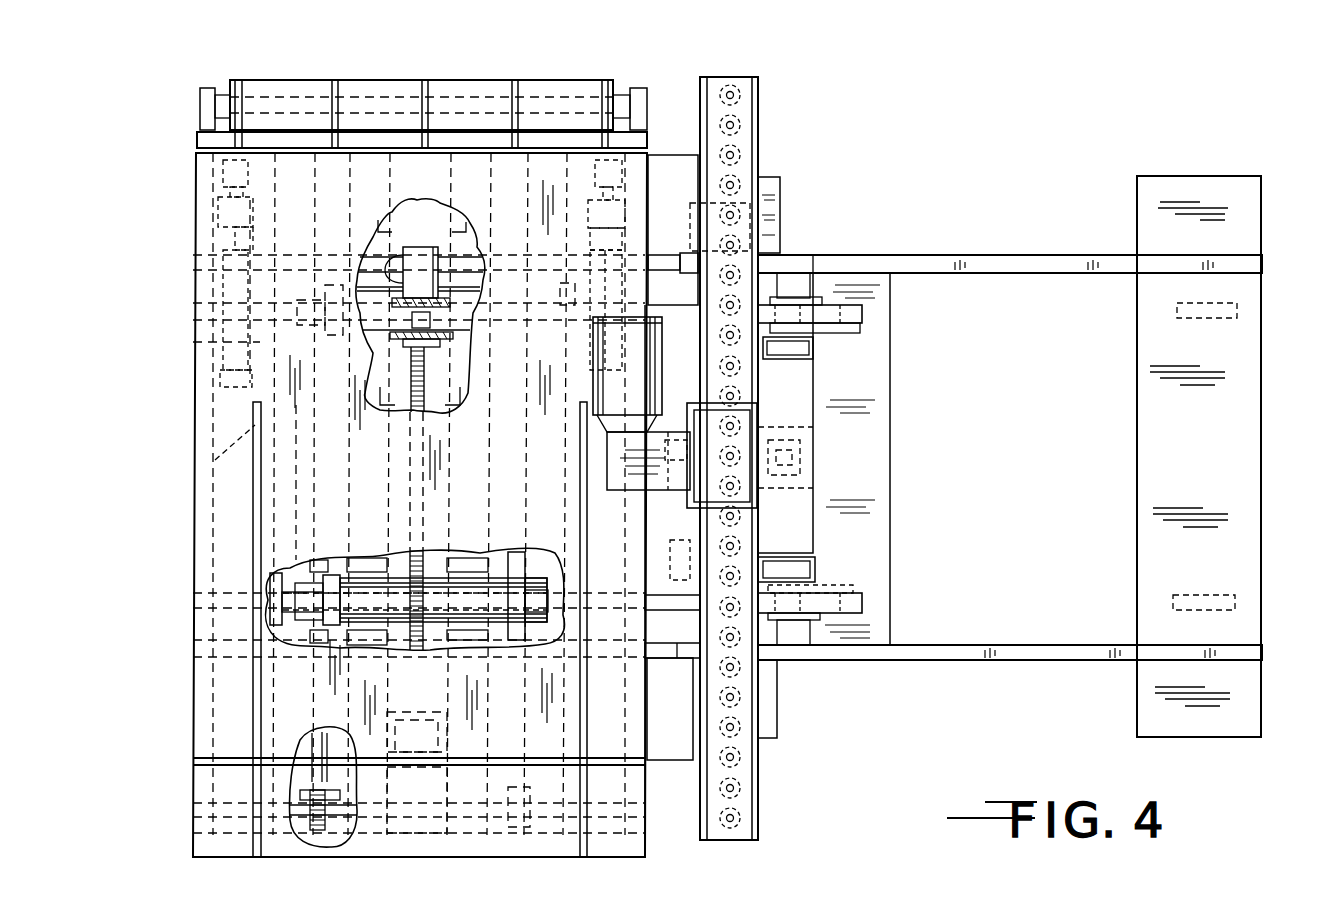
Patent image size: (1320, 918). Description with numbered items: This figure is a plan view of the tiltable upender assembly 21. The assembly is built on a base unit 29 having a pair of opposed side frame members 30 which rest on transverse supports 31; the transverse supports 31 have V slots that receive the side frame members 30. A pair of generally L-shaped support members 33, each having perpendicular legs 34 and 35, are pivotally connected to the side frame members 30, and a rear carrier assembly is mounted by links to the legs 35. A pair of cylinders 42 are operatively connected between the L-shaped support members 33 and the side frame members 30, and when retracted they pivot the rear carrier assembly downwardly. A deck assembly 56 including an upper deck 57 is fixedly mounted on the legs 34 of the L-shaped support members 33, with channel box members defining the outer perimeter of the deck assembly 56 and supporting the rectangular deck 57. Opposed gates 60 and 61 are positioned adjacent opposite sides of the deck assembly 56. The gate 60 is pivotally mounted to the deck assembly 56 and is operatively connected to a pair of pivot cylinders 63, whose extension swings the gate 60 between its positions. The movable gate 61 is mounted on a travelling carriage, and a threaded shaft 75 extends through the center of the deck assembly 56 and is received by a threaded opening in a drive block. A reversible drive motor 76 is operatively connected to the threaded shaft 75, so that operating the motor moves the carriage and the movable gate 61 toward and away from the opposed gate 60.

The tiltable upender assembly 21 is at (760, 128).
The base unit 29 is at (1091, 662).
The side frame members 30 is at (1017, 254).
The transverse supports 31 is at (1258, 722).
The L-shaped support members 33 is at (664, 255).
The legs 34 is at (660, 318).
The legs 35 is at (842, 302).
The cylinders 42 is at (437, 578).
The deck assembly 56 is at (188, 493).
The upper deck 57 is at (382, 510).
The pivoting gate 60 is at (368, 80).
The movable gate 61 is at (225, 760).
The pivot cylinders 63 is at (580, 133).
The threaded shaft 75 is at (393, 400).
The drive motor 76 is at (420, 306).